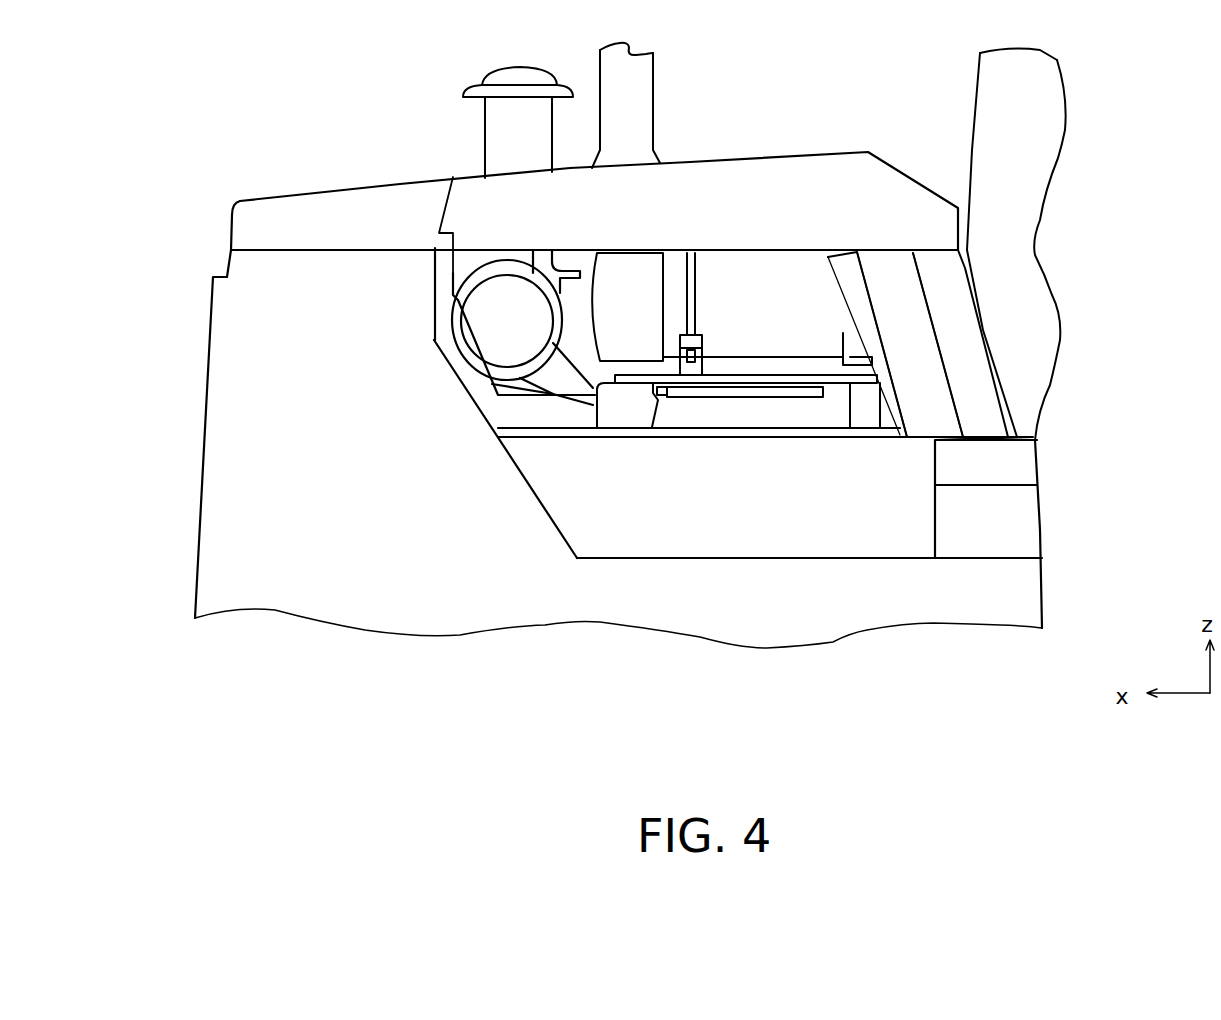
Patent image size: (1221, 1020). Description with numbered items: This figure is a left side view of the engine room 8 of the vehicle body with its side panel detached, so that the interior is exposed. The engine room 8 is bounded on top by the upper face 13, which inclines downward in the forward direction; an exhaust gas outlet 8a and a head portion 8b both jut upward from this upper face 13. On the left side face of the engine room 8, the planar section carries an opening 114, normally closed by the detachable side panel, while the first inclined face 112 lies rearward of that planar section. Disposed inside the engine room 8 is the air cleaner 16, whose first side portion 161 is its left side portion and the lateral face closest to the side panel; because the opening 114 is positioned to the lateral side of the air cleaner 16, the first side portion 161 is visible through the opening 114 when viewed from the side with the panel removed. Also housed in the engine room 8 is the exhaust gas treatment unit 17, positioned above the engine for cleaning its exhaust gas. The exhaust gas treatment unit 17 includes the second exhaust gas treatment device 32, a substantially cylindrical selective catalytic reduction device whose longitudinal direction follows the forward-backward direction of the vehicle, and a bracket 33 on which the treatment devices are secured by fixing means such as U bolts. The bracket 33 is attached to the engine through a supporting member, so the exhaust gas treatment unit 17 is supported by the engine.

The engine room 8 is at (863, 136).
The exhaust gas outlet 8a is at (642, 83).
The head portion 8b is at (492, 113).
The upper face 13 is at (780, 150).
The air cleaner 16 is at (483, 300).
The first side portion 161 is at (497, 345).
The exhaust gas treatment unit 17 is at (797, 278).
The second exhaust gas treatment device 32 is at (823, 313).
The bracket 33 is at (747, 378).
The first inclined face 112 is at (917, 343).
The opening 114 is at (703, 413).